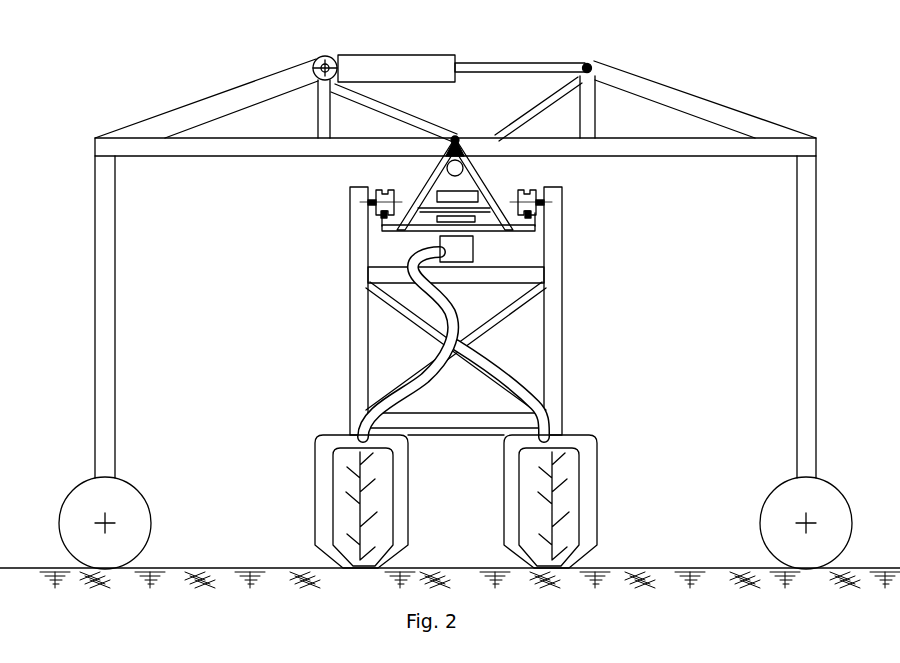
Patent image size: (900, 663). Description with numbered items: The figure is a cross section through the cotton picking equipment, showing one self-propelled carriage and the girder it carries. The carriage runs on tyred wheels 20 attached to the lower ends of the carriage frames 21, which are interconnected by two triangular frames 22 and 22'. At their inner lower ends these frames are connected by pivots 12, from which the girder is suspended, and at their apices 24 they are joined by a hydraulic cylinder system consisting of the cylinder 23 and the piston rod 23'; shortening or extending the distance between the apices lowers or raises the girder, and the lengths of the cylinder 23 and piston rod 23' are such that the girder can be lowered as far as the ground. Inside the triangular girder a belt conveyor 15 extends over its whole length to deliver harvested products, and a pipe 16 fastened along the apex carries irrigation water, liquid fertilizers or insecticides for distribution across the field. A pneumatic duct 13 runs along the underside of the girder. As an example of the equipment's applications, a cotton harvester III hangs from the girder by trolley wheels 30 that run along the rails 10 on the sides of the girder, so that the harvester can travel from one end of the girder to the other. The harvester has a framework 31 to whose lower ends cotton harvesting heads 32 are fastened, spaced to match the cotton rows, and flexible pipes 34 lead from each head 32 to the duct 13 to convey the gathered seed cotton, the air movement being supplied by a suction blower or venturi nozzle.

The rails 10 is at (380, 224).
The pivots 12 is at (454, 136).
The pneumatic duct 13 is at (464, 248).
The belt conveyor 15 is at (481, 194).
The pipe 16 is at (445, 170).
The tyred wheels 20 is at (846, 521).
The carriage frames 21 is at (810, 377).
The triangular frame 22 is at (705, 76).
The triangular frame 22' is at (206, 76).
The hydraulic cylinder 23 is at (396, 48).
The piston rod 23' is at (520, 43).
The apices 24 is at (324, 57).
The trolley wheels 30 is at (374, 190).
The framework 31 is at (556, 377).
The cotton harvesting heads 32 is at (590, 530).
The flexible pipes 34 is at (510, 388).
The cotton harvester III is at (606, 314).